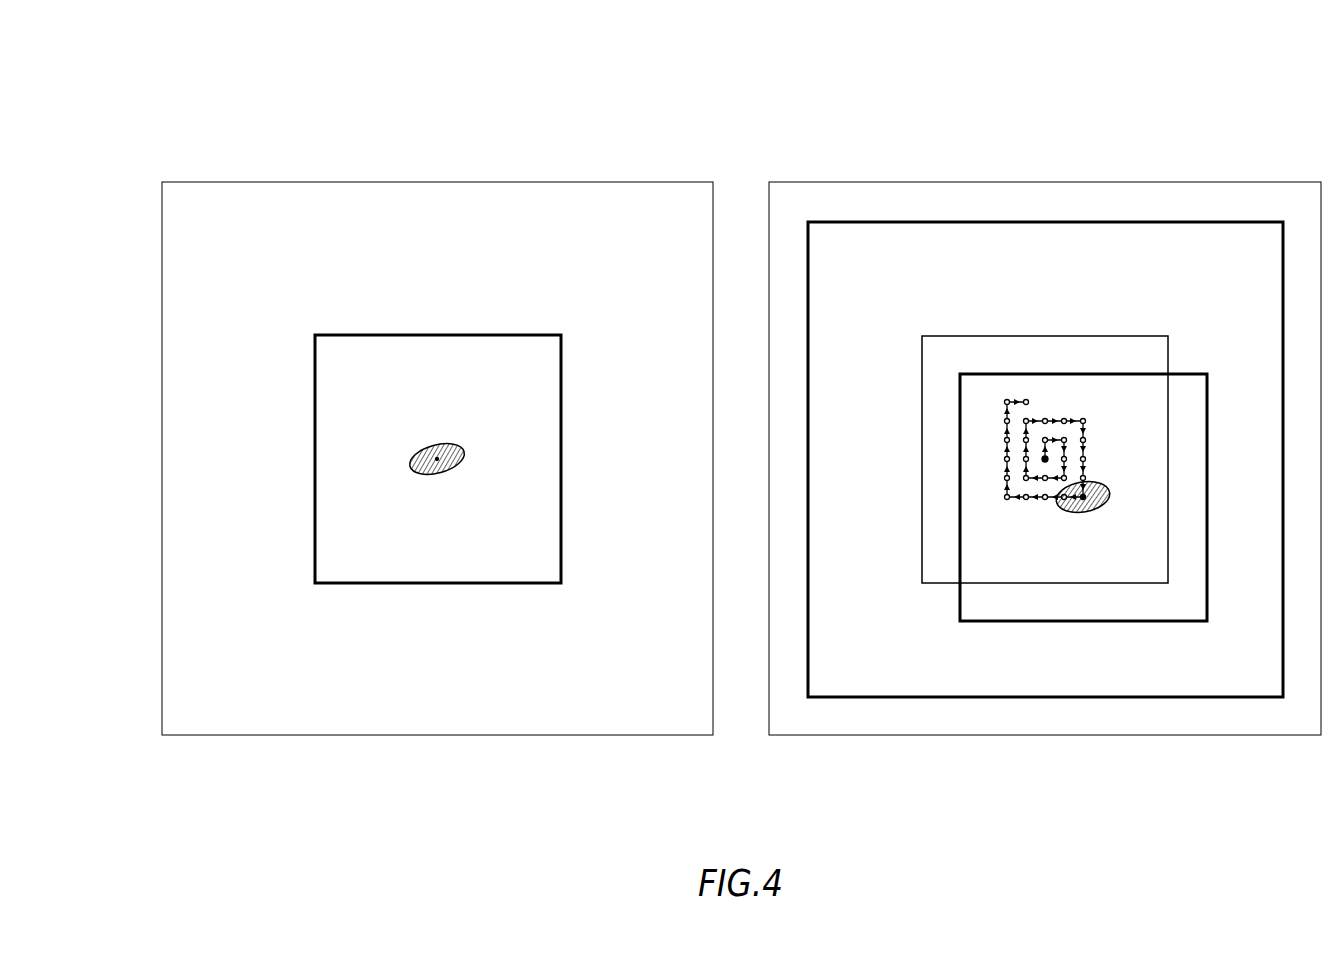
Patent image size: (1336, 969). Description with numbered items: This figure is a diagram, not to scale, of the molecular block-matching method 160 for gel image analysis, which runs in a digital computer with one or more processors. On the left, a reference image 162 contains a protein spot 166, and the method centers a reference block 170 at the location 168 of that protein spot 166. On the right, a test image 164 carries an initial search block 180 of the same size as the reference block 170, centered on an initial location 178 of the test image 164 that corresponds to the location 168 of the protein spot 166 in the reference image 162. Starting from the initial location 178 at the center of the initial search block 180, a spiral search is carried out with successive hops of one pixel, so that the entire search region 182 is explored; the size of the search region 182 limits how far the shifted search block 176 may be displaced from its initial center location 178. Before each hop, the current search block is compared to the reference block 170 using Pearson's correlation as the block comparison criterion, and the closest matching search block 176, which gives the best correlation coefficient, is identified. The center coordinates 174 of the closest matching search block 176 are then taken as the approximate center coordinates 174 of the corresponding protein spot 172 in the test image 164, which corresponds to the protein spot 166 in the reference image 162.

The molecular block-matching method 160 is at (600, 53).
The reference image 162 is at (227, 735).
The test image 164 is at (835, 735).
The protein spot 166 is at (418, 452).
The location of the protein spot 168 is at (468, 458).
The reference block 170 is at (378, 335).
The corresponding protein spot 172 is at (1060, 504).
The center coordinates 174 is at (1108, 493).
The closest matching search block 176 is at (1026, 374).
The initial location 178 is at (1048, 461).
The initial search block 180 is at (987, 336).
The search region 182 is at (873, 222).